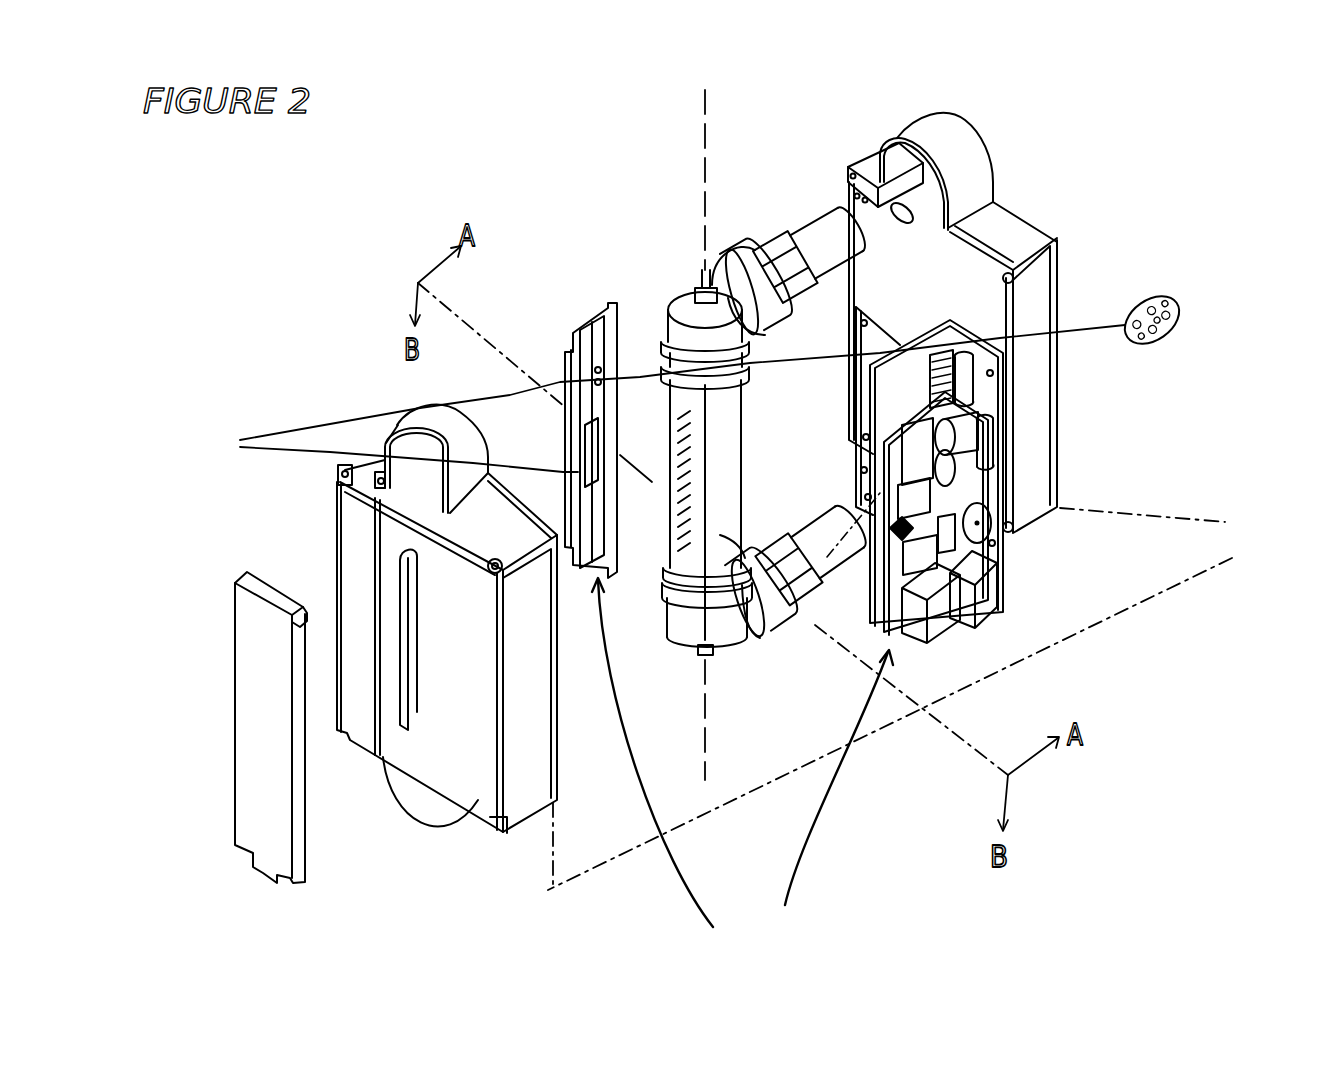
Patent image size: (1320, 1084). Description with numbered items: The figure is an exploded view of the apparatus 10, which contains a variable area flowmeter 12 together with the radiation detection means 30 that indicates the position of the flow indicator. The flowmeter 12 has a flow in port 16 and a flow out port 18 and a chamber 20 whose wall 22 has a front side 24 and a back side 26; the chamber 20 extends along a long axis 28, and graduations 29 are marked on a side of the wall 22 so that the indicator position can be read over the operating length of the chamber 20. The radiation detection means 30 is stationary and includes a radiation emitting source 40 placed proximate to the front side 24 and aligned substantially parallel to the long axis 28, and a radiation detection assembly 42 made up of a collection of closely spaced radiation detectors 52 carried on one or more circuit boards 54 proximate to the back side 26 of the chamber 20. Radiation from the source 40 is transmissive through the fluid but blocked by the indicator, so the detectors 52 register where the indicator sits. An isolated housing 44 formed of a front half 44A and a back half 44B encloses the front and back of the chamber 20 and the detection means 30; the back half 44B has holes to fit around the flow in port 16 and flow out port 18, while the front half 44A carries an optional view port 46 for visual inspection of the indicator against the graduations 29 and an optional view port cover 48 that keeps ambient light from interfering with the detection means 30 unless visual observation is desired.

The apparatus 10 is at (355, 378).
The variable area flowmeter 12 is at (723, 462).
The flow in port 16 is at (814, 592).
The flow out port 18 is at (796, 232).
The chamber 20 is at (733, 470).
The wall 22 is at (742, 483).
The front side 24 is at (676, 533).
The back side 26 is at (673, 533).
The long axis 28 is at (708, 94).
The graduations 29 is at (680, 430).
The radiation detection means 30 is at (742, 767).
The radiation emitting source 40 is at (1013, 578).
The radiation detection assembly 42 is at (584, 318).
The isolated housing 44 is at (909, 699).
The front half 44A is at (357, 656).
The back half 44B is at (1043, 487).
The view port 46 is at (402, 577).
The view port cover 48 is at (253, 773).
The radiation detectors 52 is at (1150, 297).
The circuit boards 54 is at (662, 398).